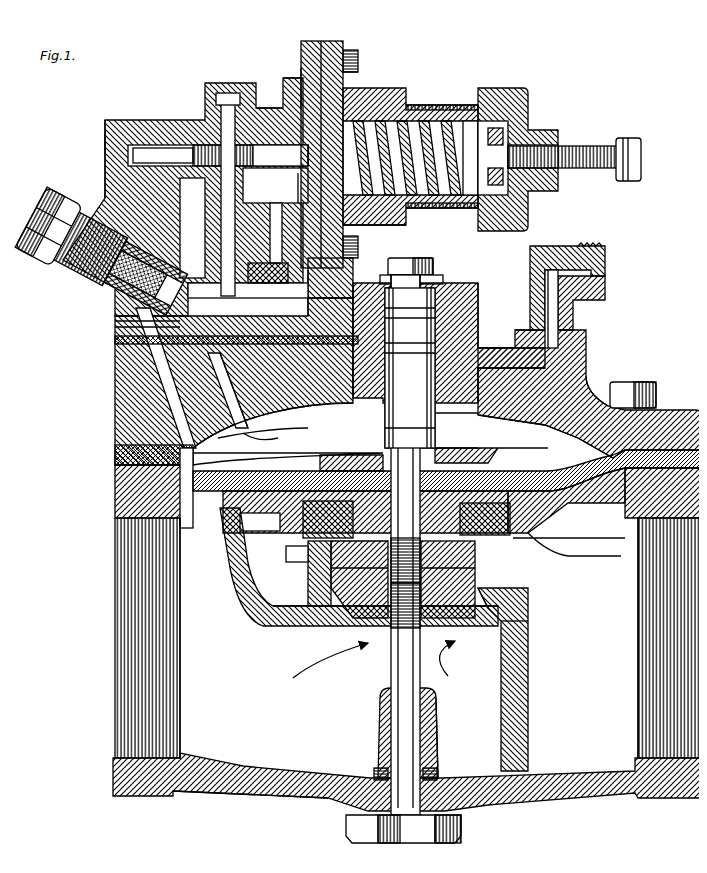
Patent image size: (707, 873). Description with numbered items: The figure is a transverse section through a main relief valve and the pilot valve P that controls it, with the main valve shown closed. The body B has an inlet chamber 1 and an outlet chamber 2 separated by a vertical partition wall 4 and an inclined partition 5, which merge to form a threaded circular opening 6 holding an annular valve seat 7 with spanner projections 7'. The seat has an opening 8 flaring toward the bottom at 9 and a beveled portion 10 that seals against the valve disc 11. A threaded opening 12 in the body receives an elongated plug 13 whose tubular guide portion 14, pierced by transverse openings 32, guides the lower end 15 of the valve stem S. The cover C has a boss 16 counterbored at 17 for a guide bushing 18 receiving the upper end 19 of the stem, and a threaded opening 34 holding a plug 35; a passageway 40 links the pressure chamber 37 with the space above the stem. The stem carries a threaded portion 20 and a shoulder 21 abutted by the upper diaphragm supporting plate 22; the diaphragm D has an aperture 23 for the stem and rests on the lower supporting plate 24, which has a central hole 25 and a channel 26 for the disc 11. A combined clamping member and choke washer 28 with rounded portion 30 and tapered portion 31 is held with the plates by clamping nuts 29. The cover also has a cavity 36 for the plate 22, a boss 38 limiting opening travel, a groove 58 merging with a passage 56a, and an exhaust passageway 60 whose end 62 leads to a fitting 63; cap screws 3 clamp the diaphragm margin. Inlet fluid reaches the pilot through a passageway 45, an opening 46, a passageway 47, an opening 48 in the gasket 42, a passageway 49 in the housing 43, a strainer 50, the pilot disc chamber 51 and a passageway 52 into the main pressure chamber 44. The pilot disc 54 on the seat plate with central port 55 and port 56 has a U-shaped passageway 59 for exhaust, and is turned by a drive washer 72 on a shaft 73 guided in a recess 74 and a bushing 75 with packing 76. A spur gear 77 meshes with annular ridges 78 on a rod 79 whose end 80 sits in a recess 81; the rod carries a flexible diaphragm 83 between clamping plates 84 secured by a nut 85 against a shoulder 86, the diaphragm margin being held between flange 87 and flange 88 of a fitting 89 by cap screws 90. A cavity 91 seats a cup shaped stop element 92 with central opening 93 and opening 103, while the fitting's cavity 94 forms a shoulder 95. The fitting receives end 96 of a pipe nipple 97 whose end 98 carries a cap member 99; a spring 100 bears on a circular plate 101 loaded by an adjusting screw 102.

The inlet chamber 1 is at (150, 660).
The outlet chamber 2 is at (638, 638).
The cap screws 3 is at (625, 376).
The vertical partition wall 4 is at (515, 720).
The inclined partition 5 is at (215, 585).
The circular opening 6 is at (510, 615).
The annular valve seat 7 is at (453, 651).
The circumferential projections 7' is at (399, 587).
The circular opening 8 is at (460, 560).
The flared portion 9 is at (315, 618).
The beveled portion 10 is at (600, 603).
The valve disc 11 is at (278, 545).
The threaded opening 12 is at (470, 798).
The elongated plug 13 is at (408, 836).
The tubular guide portion 14 is at (370, 730).
The lower end of valve stem 15 is at (428, 730).
The central boss portion 16 is at (450, 312).
The counterbore 17 is at (475, 340).
The guide bushing 18 is at (430, 408).
The upper end of valve stem 19 is at (410, 368).
The threaded portion 20 is at (385, 608).
The shoulder 21 is at (448, 450).
The upper diaphragm supporting plate 22 is at (540, 458).
The aperture 23 is at (365, 462).
The lower diaphragm supporting plate 24 is at (250, 518).
The central hole 25 is at (362, 580).
The channel 26 is at (290, 468).
The combined clamping member and choke washer 28 is at (414, 600).
The clamping nuts 29 is at (375, 590).
The rounded peripheral portion 30 is at (345, 573).
The tapered portion 31 is at (340, 530).
The transverse openings 32 is at (372, 768).
The threaded opening 34 is at (440, 278).
The plug 35 is at (418, 258).
The cavity 36 is at (320, 392).
The pressure chamber 37 is at (580, 370).
The boss 38 is at (445, 405).
The passageway 40 is at (345, 345).
The gasket 42 is at (110, 333).
The pilot valve housing 43 is at (140, 115).
The main pressure chamber 44 is at (260, 100).
The passageway 45 is at (178, 522).
The opening 46 is at (107, 447).
The passageway 47 is at (150, 395).
The opening 48 is at (107, 360).
The passageway 49 is at (110, 317).
The strainer 50 is at (66, 284).
The pilot disc chamber 51 is at (300, 264).
The passageway 52 is at (180, 205).
The pilot valve disc 54 is at (303, 294).
The central port 55 is at (306, 306).
The port 56 is at (205, 345).
The passage 56a is at (255, 425).
The groove 58 is at (275, 424).
The U-shaped passageway 59 is at (308, 288).
The exhaust passageway 60 is at (505, 330).
The opposite end of passageway 62 is at (578, 320).
The fitting 63 is at (592, 248).
The drive washer 72 is at (248, 290).
The vertical shaft 73 is at (218, 82).
The recess 74 is at (228, 82).
The bushing 75 is at (268, 258).
The packing 76 is at (247, 196).
The spur gear 77 is at (185, 115).
The annular ridges 78 is at (280, 155).
The rod 79 is at (122, 136).
The end of rod 80 is at (218, 155).
The recess 81 is at (97, 130).
The flexible diaphragm 83 is at (322, 36).
The clamping plates 84 is at (268, 232).
The nut 85 is at (355, 95).
The shoulder 86 is at (282, 72).
The flange 87 is at (302, 36).
The flange 88 is at (342, 44).
The fitting 89 is at (402, 96).
The cap screws 90 is at (350, 60).
The cavity 91 is at (292, 62).
The cup shaped stop element 92 is at (345, 232).
The central opening 93 is at (297, 155).
The cavity 94 is at (348, 92).
The shoulder 95 is at (368, 214).
The end of pipe nipple 96 is at (400, 92).
The threaded pipe nipple 97 is at (470, 118).
The opposite end of nipple 98 is at (500, 112).
The cap member 99 is at (525, 84).
The spring 100 is at (445, 205).
The circular plate 101 is at (493, 100).
The adjusting screw 102 is at (618, 130).
The opening 103 is at (292, 190).
The pilot valve P is at (95, 165).
The cover C is at (660, 402).
The circular diaphragm D is at (560, 520).
The body B is at (226, 790).
The valve stem S is at (383, 668).